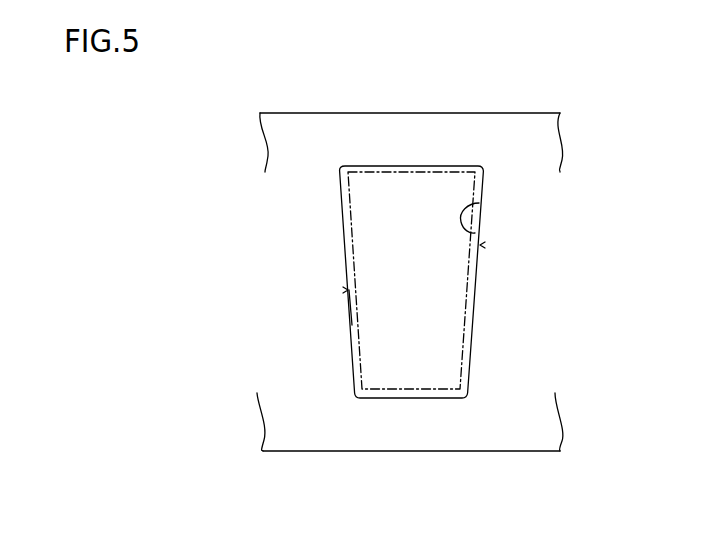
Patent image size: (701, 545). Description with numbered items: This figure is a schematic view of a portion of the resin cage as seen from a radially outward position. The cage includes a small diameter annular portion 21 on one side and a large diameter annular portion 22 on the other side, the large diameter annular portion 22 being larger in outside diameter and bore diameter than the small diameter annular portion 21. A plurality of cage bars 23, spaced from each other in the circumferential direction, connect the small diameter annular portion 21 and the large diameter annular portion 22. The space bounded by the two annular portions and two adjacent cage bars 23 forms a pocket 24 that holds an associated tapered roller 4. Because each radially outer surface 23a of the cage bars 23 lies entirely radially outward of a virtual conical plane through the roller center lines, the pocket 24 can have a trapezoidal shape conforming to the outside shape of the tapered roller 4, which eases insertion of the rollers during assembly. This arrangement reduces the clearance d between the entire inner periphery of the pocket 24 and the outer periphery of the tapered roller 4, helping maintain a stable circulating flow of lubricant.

The large diameter annular portion 22 is at (445, 128).
The small diameter annular portion 21 is at (373, 440).
The tapered roller 4 is at (470, 280).
The cage bar 23 is at (328, 251).
The radially outer surface 23a is at (332, 334).
The pocket 24 is at (480, 203).
The clearance d is at (343, 290).